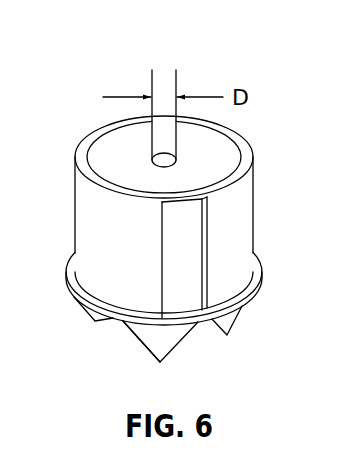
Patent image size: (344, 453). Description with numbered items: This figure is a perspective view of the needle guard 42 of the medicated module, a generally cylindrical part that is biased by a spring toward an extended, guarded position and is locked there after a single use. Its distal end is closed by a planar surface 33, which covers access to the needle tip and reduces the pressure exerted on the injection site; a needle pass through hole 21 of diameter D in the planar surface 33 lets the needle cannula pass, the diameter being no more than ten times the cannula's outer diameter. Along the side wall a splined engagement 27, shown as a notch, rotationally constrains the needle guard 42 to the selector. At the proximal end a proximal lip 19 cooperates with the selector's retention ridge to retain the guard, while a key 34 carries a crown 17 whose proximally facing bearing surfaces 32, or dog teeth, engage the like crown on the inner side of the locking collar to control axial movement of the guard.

The needle pass through hole 21 is at (176, 82).
The planar surface 33 is at (225, 158).
The needle guard 42 is at (88, 232).
The splined engagement 27 is at (182, 240).
The proximal lip 19 is at (262, 271).
The crown 17 is at (168, 349).
The proximally facing bearing surfaces 32 is at (133, 351).
The key 34 is at (153, 345).